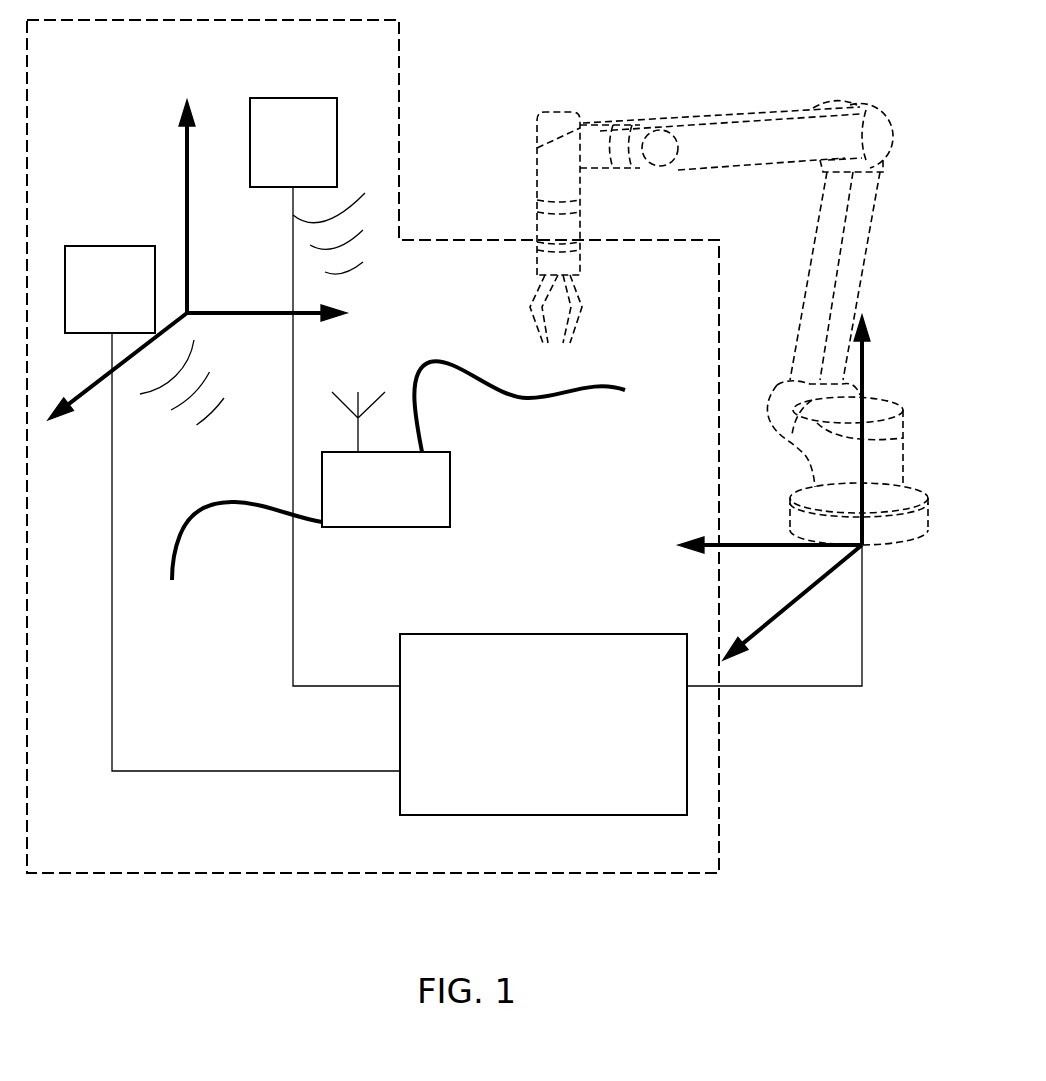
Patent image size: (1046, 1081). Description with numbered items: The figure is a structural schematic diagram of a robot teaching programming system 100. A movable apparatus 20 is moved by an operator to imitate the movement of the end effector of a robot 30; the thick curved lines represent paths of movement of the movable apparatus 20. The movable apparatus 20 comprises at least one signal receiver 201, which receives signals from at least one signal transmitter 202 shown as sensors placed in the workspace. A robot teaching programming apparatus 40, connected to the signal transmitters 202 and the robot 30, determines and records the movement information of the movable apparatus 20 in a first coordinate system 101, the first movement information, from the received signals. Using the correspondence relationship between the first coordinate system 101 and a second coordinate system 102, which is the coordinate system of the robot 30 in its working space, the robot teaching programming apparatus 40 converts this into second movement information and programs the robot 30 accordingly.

The robot teaching programming system 100 is at (400, 45).
The first coordinate system 101 is at (188, 245).
The second coordinate system 102 is at (817, 587).
The movable apparatus 20 is at (398, 470).
The signal receiver 201 is at (427, 504).
The signal transmitter 202 is at (313, 157).
The robot 30 is at (862, 252).
The robot teaching programming apparatus 40 is at (558, 738).